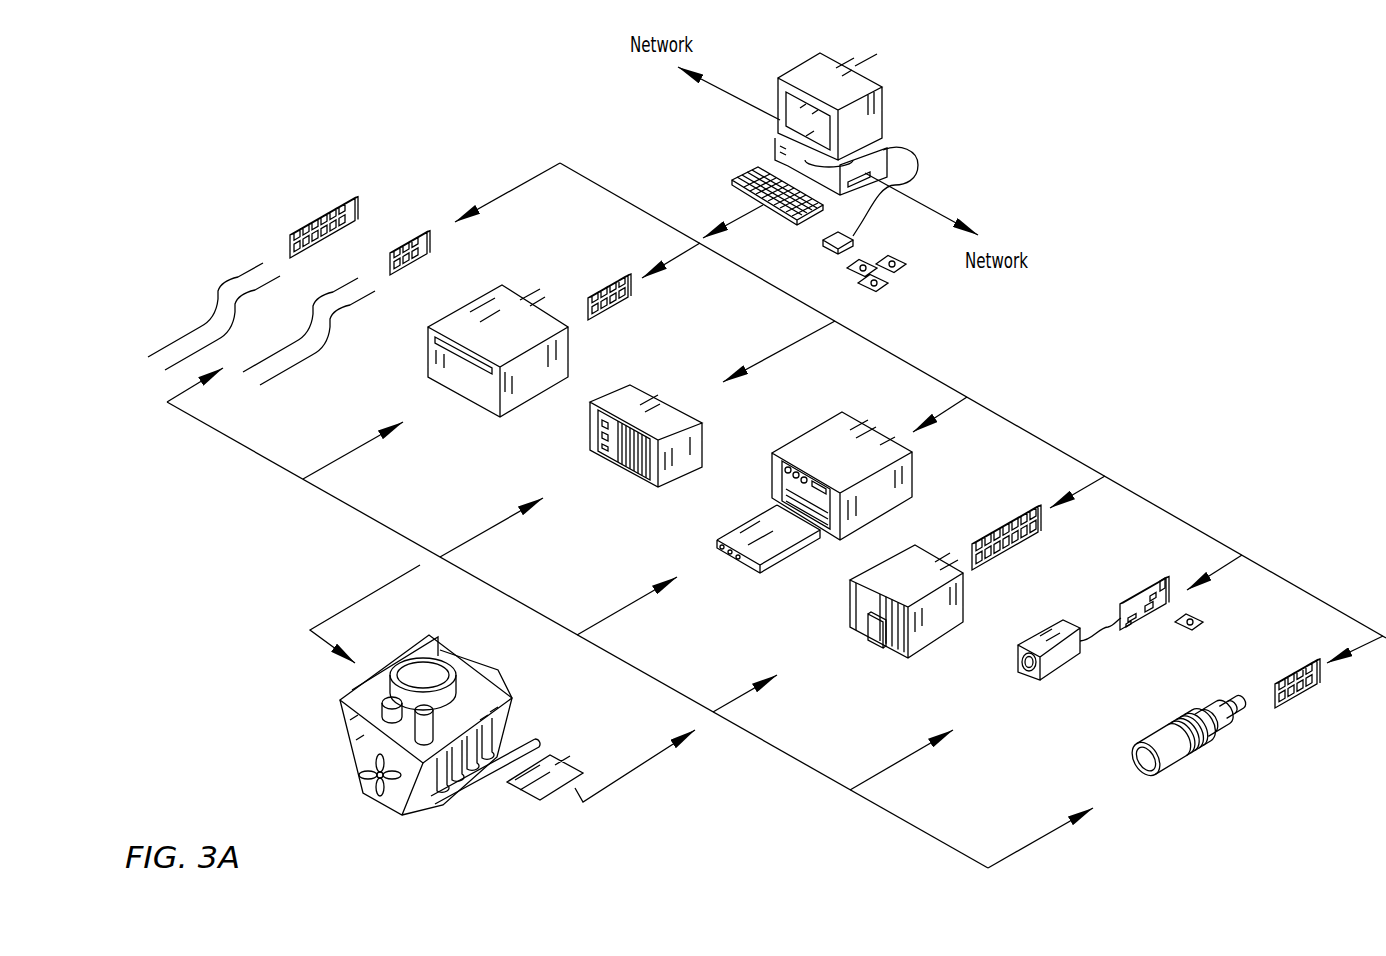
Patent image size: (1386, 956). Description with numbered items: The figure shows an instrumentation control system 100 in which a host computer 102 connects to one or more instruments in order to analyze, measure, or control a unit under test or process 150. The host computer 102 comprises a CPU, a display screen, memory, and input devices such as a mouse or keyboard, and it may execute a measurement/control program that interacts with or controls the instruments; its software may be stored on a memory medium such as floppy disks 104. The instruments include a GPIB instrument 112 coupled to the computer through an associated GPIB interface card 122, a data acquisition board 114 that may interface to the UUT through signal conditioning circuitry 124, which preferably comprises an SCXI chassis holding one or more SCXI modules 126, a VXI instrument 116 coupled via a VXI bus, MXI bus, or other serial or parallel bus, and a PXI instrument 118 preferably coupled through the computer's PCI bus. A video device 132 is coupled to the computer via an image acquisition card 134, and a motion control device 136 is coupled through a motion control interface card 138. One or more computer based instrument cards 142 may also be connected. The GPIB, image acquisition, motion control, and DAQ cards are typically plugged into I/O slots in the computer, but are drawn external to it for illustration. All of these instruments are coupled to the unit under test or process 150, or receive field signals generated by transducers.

The instrumentation control system 100 is at (1177, 148).
The host computer 102 is at (847, 73).
The floppy disks 104 is at (878, 283).
The GPIB instrument 112 is at (477, 320).
The data acquisition board 114 is at (1027, 507).
The VXI instrument 116 is at (820, 443).
The PXI instrument 118 is at (622, 402).
The GPIB interface card 122 is at (603, 285).
The signal conditioning circuitry 124 is at (863, 613).
The SCXI module 126 is at (880, 628).
The video device 132 is at (1053, 663).
The image acquisition card 134 is at (1140, 593).
The motion control device 136 is at (1170, 770).
The motion control interface card 138 is at (1297, 695).
The computer based instrument cards 142 is at (290, 235).
The unit under test or process 150 is at (355, 738).